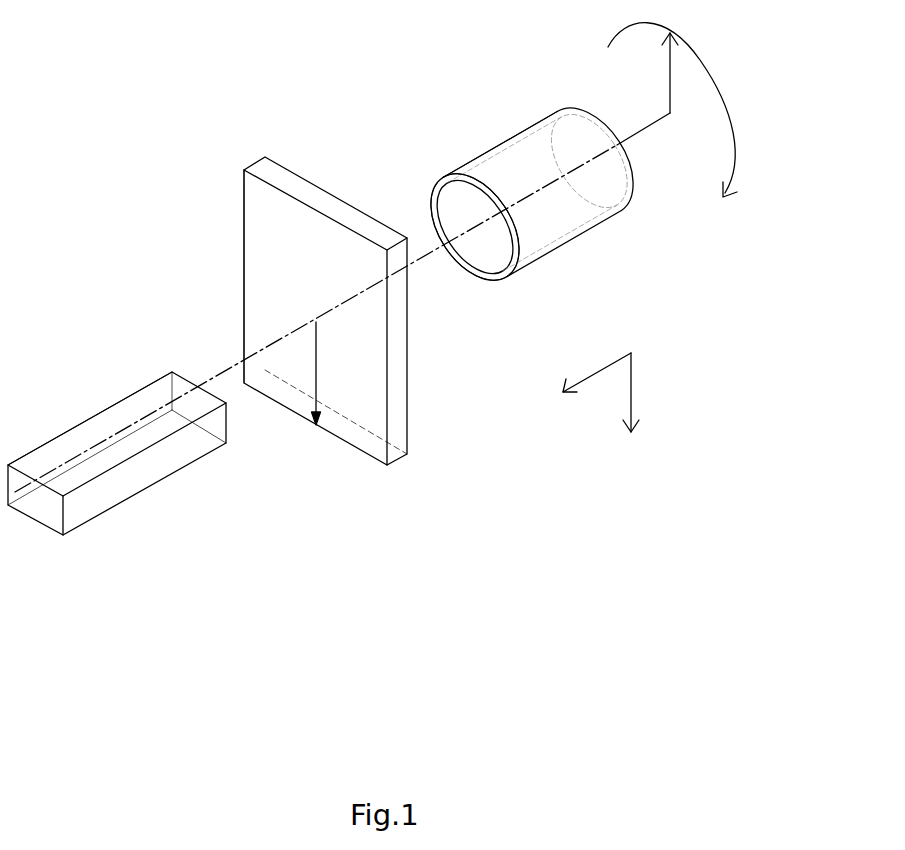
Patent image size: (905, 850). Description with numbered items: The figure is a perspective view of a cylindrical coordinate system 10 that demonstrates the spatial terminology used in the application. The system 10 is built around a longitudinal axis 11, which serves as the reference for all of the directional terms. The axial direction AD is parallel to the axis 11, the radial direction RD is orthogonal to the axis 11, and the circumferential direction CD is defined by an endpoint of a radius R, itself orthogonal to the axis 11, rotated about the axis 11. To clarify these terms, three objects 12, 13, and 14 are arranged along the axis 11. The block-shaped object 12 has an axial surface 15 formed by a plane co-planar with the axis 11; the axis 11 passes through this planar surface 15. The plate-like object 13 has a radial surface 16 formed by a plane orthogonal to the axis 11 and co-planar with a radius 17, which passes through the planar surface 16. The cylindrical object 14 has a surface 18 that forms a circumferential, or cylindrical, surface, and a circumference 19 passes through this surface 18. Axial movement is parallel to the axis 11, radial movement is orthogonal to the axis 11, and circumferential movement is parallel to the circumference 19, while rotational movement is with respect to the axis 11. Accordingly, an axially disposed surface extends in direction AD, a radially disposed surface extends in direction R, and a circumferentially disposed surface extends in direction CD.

The cylindrical coordinate system 10 is at (193, 195).
The longitudinal axis 11 is at (621, 140).
The object 12 is at (95, 535).
The object 13 is at (430, 464).
The object 14 is at (563, 270).
The axial surface 15 is at (83, 437).
The radial surface 16 is at (257, 275).
The radius 17 is at (317, 368).
The circumferential surface 18 is at (502, 141).
The circumference 19 is at (432, 197).
The radius R is at (670, 72).
The circumferential direction CD is at (718, 80).
The axial direction AD is at (598, 373).
The radial direction RD is at (632, 386).